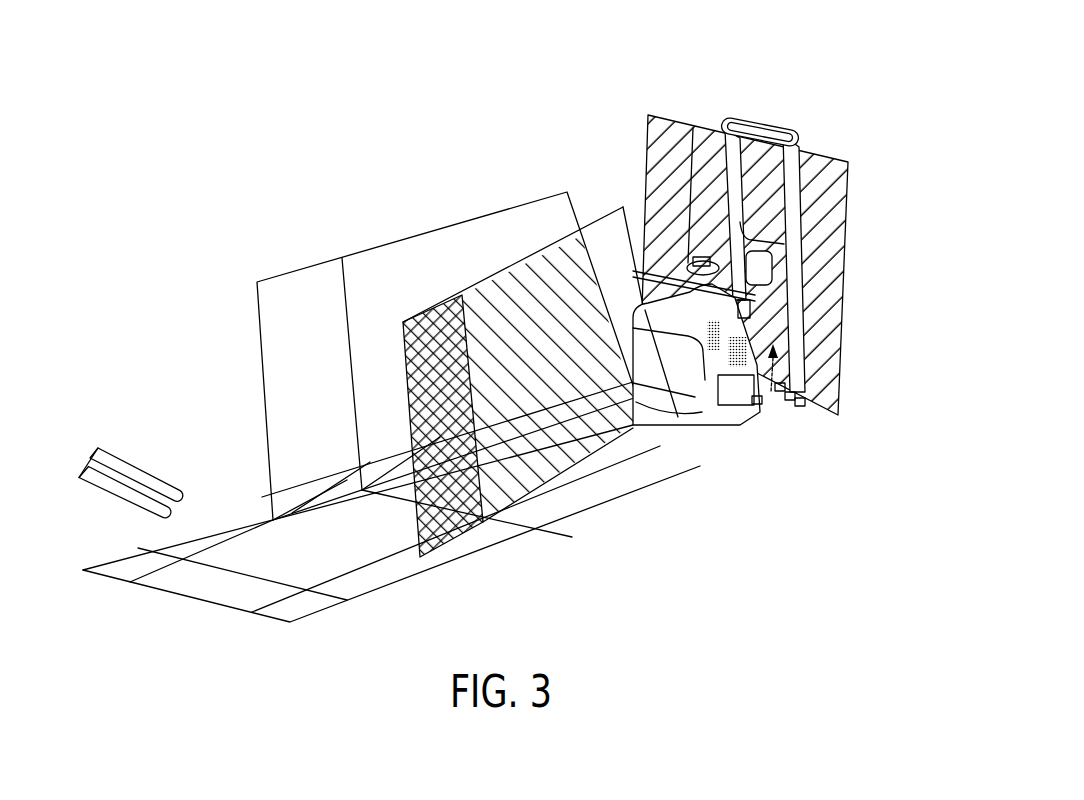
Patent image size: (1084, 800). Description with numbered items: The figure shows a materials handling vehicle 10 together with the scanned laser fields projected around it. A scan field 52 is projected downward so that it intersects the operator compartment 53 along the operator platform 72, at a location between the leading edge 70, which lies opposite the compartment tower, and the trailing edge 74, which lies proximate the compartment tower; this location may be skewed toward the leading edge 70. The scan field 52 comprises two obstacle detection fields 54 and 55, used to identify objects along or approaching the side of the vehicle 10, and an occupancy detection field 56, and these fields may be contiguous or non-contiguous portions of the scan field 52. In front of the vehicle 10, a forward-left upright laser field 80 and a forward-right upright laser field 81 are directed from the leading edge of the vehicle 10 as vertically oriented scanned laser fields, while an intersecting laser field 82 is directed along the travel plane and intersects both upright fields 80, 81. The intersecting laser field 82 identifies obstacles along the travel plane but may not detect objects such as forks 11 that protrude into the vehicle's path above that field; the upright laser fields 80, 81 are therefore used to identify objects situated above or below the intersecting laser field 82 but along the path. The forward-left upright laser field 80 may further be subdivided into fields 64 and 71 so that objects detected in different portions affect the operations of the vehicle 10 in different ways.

The materials handling vehicle 10 is at (757, 263).
The forks 11 is at (142, 437).
The scan field 52 is at (783, 265).
The operator compartment 53 is at (790, 395).
The obstacle detection field 54 is at (676, 216).
The obstacle detection field 55 is at (838, 220).
The occupancy detection field 56 is at (759, 216).
The field 64 is at (453, 276).
The leading edge 70 is at (758, 400).
The field 71 is at (306, 326).
The operator platform 72 is at (780, 388).
The trailing edge 74 is at (797, 402).
The forward-left upright laser field 80 is at (447, 359).
The forward-right upright laser field 81 is at (605, 212).
The intersecting laser field 82 is at (643, 488).